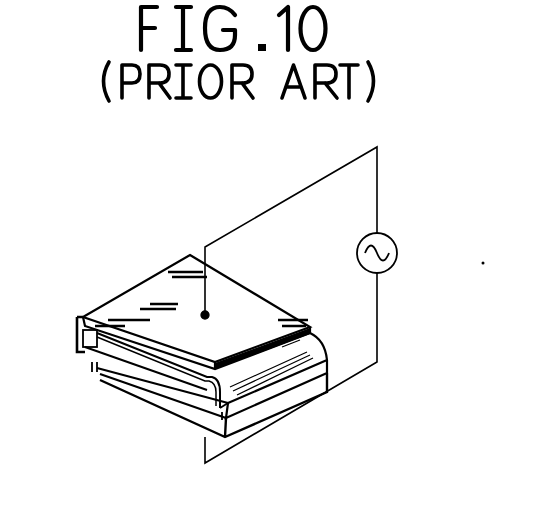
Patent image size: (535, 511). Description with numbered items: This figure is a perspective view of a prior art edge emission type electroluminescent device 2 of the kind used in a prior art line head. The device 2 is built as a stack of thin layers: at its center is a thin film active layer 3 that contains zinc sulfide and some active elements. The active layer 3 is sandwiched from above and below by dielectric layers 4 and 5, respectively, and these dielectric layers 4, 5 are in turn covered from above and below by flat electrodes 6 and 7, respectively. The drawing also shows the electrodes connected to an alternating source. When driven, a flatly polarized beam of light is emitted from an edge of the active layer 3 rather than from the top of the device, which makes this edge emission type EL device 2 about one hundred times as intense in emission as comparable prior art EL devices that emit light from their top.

The edge emission type EL device 2 is at (195, 238).
The thin film active layer 3 is at (163, 377).
The dielectric layer 4 is at (108, 332).
The dielectric layer 5 is at (190, 412).
The flat electrode 6 is at (152, 287).
The flat electrode 7 is at (118, 378).